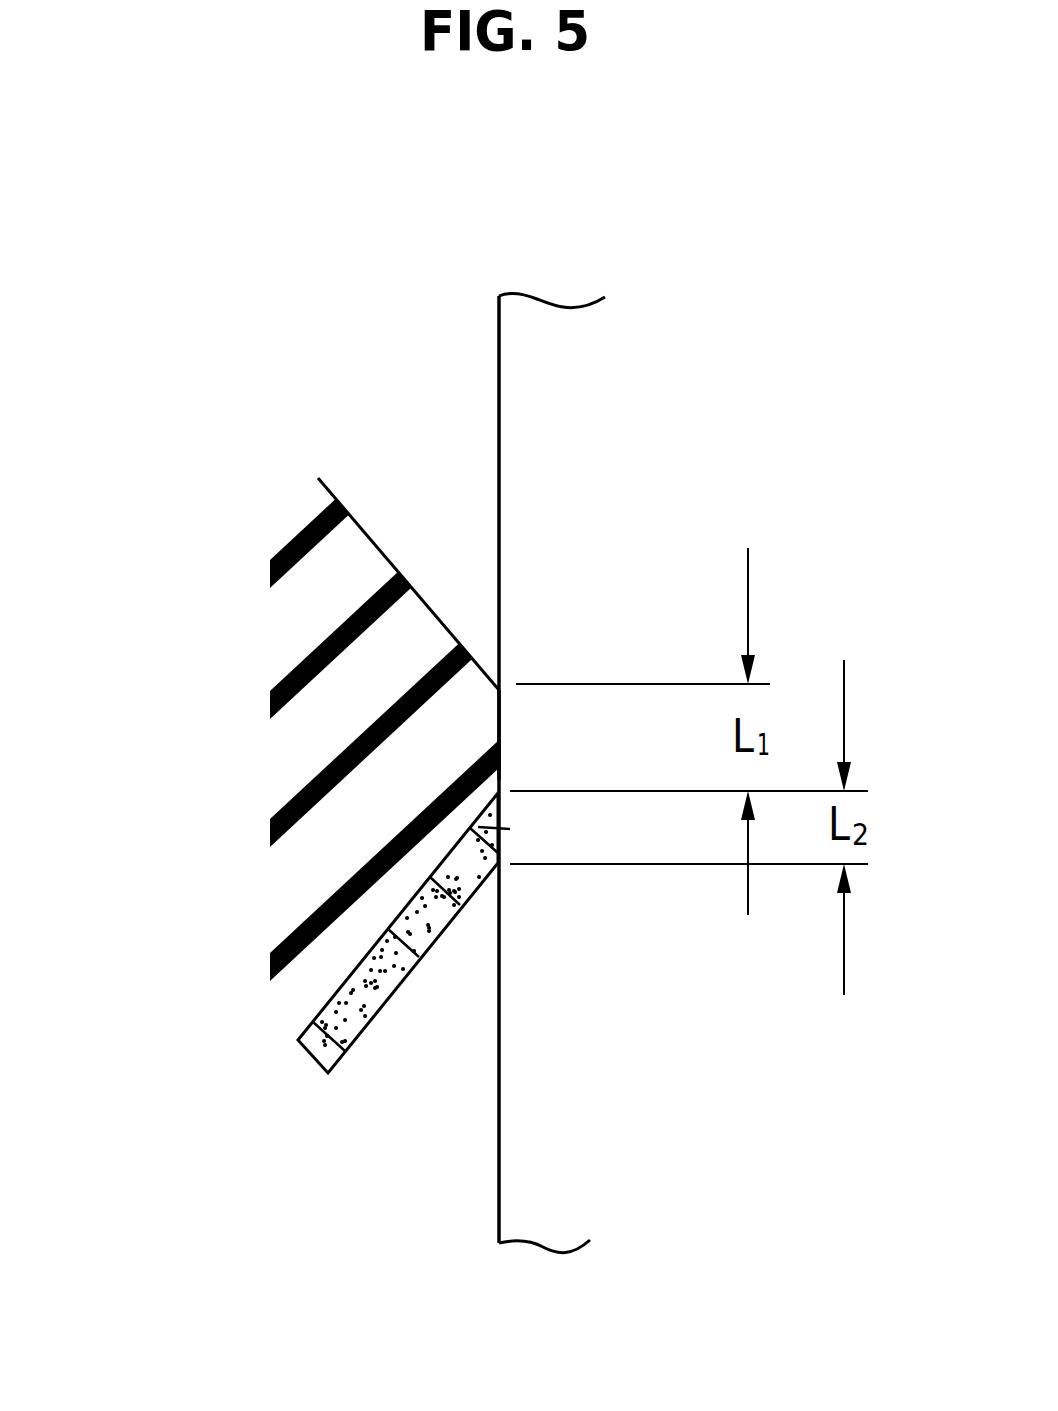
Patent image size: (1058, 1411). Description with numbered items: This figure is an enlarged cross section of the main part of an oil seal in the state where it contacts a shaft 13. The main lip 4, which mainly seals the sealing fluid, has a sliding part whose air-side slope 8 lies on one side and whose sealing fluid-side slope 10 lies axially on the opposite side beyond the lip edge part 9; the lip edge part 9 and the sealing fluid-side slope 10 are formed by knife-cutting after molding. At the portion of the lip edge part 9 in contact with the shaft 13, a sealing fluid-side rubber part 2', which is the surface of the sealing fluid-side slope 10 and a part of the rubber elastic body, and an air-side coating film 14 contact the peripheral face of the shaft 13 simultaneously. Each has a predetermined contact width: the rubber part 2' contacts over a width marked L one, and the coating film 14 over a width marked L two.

The sealing fluid-side rubber part 2' is at (581, 559).
The main lip 4 is at (307, 743).
The air-side slope 8 is at (373, 952).
The lip edge part 9 is at (498, 763).
The sealing fluid-side slope 10 is at (375, 545).
The shaft 13 is at (522, 1150).
The air-side coating film 14 is at (510, 829).